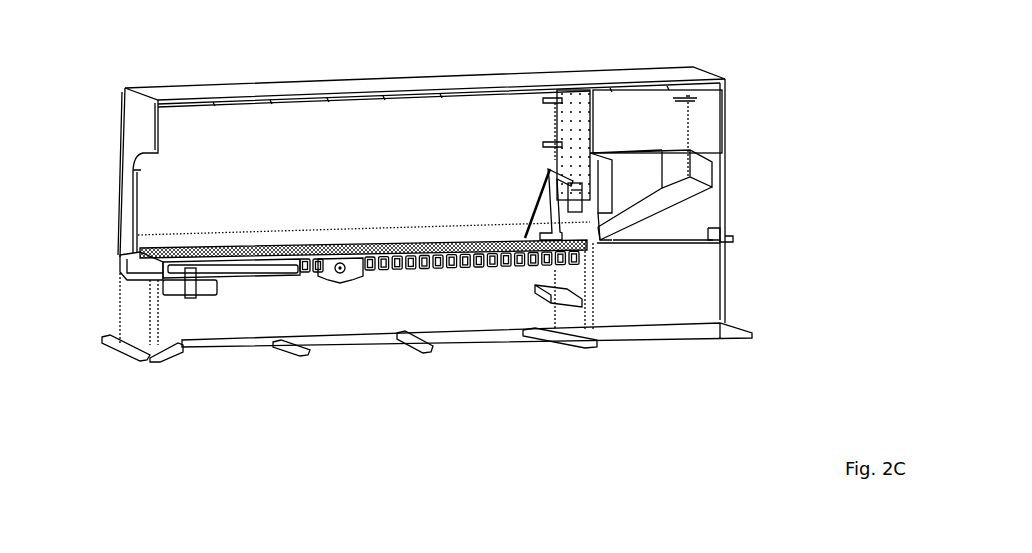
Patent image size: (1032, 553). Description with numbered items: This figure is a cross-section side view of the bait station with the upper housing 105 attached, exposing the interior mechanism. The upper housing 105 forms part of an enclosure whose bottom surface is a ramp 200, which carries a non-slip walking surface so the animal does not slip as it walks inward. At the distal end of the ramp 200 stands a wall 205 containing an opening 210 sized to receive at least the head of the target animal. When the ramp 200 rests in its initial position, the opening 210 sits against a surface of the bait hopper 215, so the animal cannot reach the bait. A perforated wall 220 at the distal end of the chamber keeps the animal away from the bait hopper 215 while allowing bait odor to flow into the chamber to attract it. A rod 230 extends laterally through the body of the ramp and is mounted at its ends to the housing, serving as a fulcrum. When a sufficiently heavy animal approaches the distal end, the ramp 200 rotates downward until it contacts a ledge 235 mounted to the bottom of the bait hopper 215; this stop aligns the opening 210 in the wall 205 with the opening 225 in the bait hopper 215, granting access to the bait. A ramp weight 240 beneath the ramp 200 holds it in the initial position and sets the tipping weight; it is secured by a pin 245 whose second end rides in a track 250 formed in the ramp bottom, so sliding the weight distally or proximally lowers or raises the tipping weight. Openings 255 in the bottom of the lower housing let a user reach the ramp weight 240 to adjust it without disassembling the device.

The upper housing 105 is at (627, 75).
The ramp 200 is at (125, 258).
The wall 205 is at (550, 172).
The opening 210 is at (572, 212).
The bait hopper 215 is at (678, 165).
The wall 220 is at (578, 110).
The opening 225 is at (598, 223).
The rod 230 is at (340, 283).
The ledge 235 is at (563, 295).
The ramp weight 240 is at (205, 287).
The pin 245 is at (183, 300).
The track 250 is at (205, 255).
The openings 255 is at (402, 430).